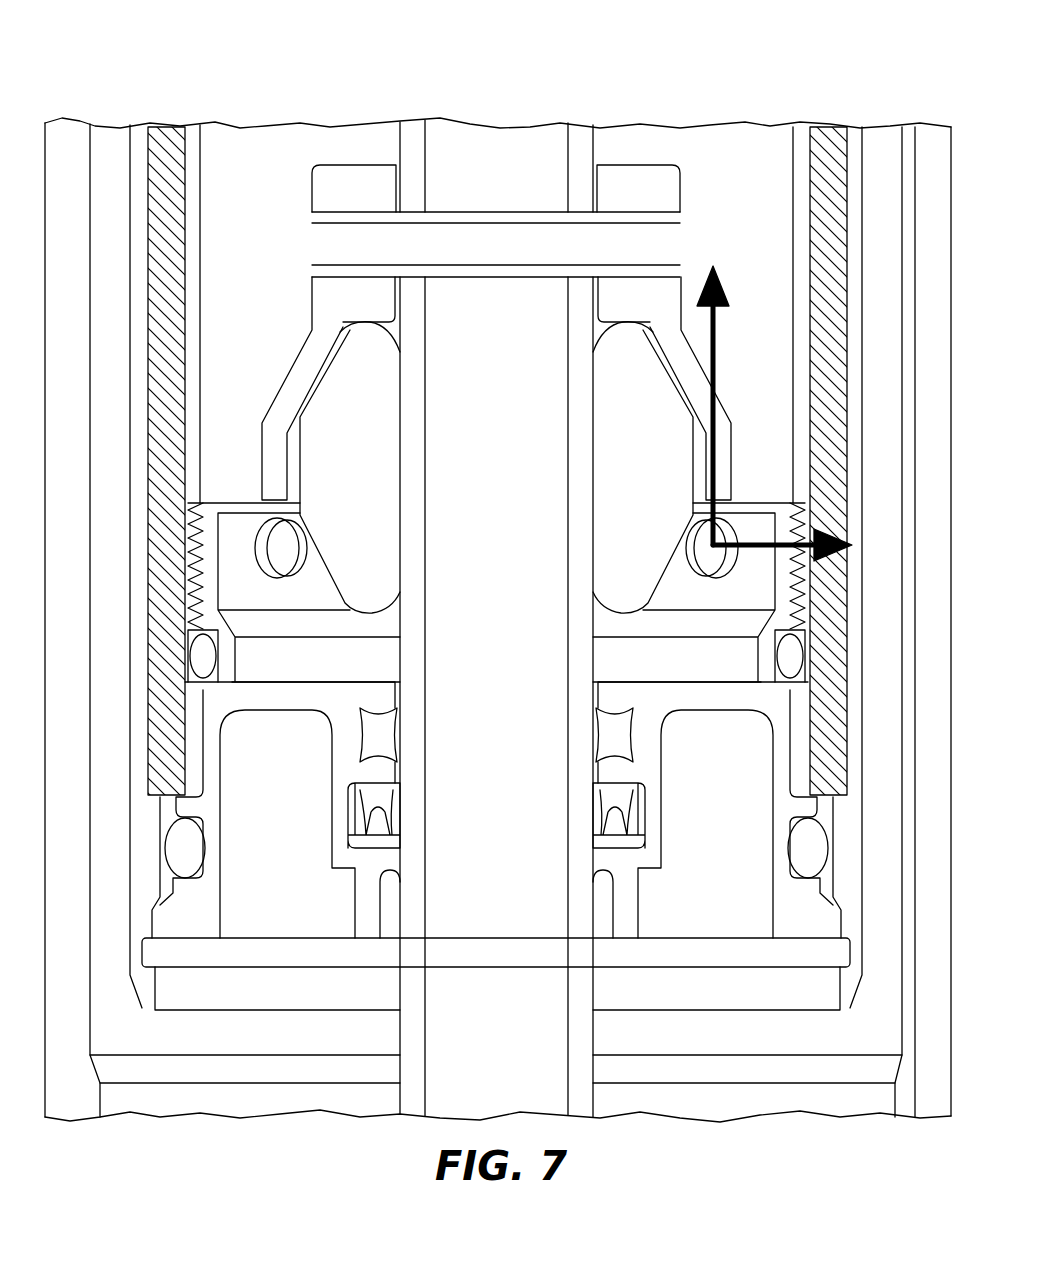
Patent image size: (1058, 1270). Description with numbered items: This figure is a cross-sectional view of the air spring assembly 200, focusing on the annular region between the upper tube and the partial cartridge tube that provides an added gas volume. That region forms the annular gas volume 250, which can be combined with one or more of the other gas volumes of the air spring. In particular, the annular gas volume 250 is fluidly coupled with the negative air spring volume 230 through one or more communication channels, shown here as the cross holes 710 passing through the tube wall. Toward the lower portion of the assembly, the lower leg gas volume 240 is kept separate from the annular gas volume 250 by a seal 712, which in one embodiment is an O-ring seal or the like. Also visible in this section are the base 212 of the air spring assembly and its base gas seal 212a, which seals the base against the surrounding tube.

The air spring assembly 200 is at (750, 52).
The negative air spring volume 230 is at (732, 150).
The cross holes 710 is at (737, 520).
The annular gas volume 250 is at (838, 127).
The lower leg gas volume 240 is at (838, 1100).
The base 212 is at (195, 922).
The base gas seal 212a is at (780, 655).
The seal 712 is at (192, 848).